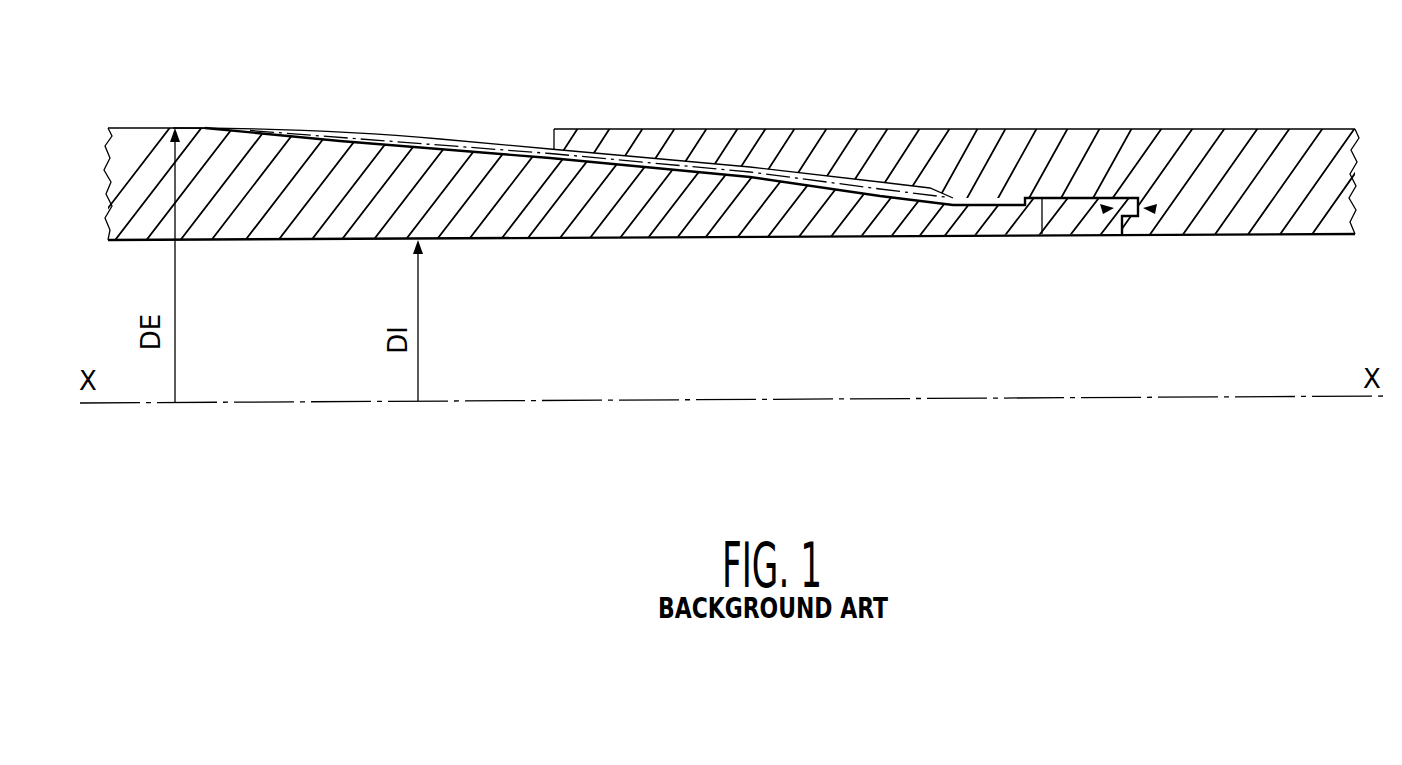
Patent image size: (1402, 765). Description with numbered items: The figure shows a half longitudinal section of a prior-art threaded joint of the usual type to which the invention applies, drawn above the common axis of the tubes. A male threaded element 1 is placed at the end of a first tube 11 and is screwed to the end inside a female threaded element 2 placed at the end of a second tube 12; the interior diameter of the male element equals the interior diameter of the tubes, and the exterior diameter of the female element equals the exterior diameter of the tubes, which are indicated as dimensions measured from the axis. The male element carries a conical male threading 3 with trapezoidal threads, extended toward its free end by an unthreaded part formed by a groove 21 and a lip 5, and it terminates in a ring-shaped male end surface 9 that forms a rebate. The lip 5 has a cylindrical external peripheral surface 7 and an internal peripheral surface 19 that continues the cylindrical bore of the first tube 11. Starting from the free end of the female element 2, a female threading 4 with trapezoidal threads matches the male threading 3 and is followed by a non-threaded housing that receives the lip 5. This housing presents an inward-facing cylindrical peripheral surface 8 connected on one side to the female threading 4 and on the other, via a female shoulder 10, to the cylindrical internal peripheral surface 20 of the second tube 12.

The male threaded element 1 is at (644, 253).
The female threaded element 2 is at (826, 106).
The male threading 3 is at (458, 150).
The female threading 4 is at (723, 240).
The lip 5 is at (1058, 218).
The external peripheral surface 7 is at (1068, 205).
The peripheral surface 8 is at (1078, 197).
The male end surface 9 is at (1104, 212).
The female shoulder 10 is at (1153, 212).
The first tube 11 is at (247, 183).
The second tube 12 is at (1227, 180).
The internal peripheral surface 19 is at (850, 238).
The cylindrical internal peripheral surface 20 is at (1268, 235).
The groove 21 is at (995, 196).